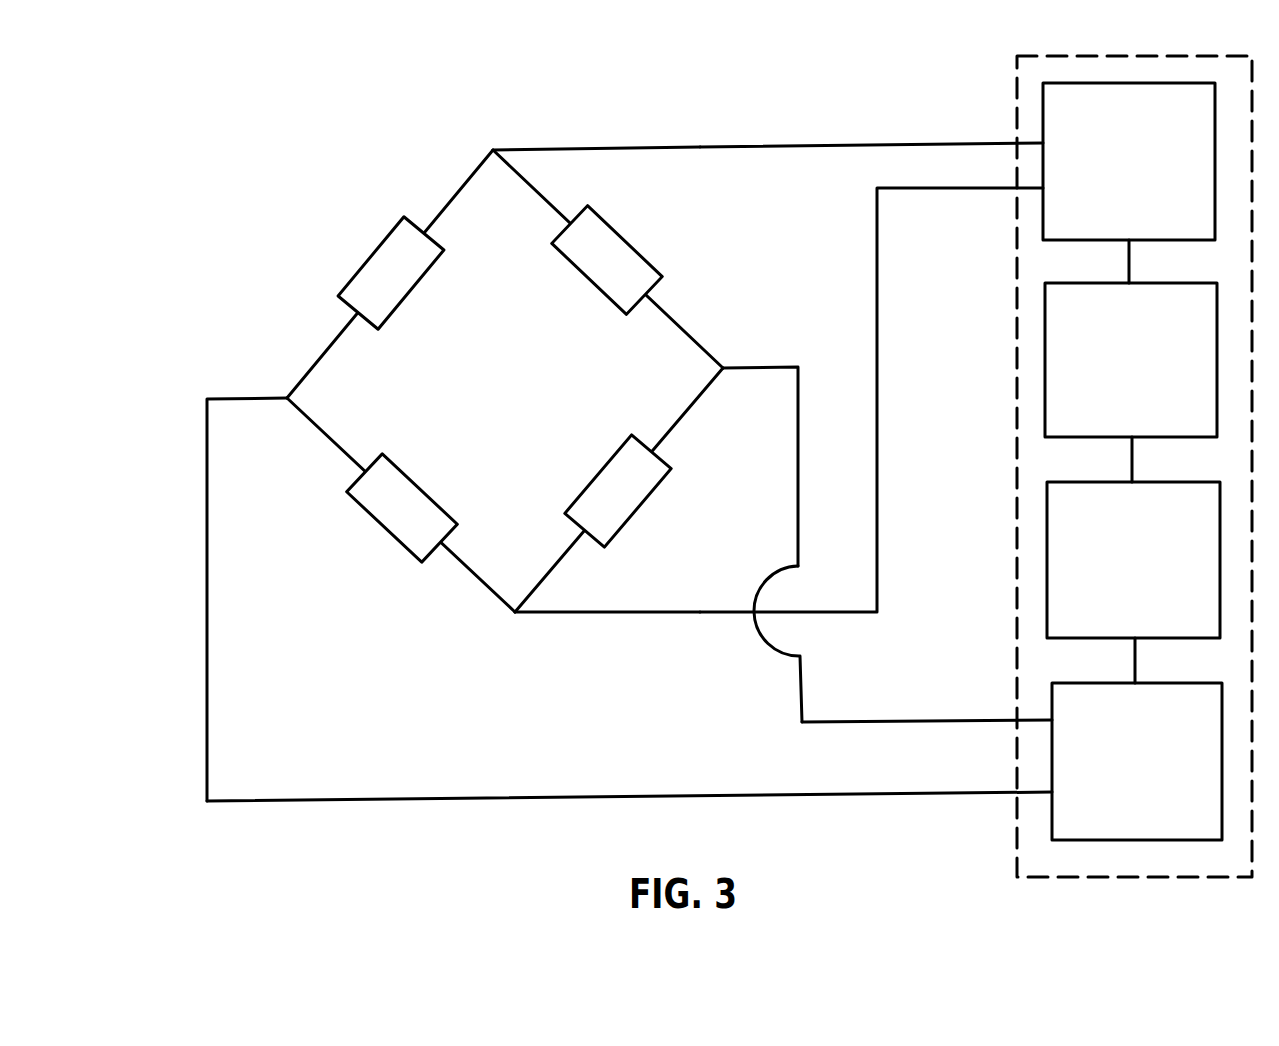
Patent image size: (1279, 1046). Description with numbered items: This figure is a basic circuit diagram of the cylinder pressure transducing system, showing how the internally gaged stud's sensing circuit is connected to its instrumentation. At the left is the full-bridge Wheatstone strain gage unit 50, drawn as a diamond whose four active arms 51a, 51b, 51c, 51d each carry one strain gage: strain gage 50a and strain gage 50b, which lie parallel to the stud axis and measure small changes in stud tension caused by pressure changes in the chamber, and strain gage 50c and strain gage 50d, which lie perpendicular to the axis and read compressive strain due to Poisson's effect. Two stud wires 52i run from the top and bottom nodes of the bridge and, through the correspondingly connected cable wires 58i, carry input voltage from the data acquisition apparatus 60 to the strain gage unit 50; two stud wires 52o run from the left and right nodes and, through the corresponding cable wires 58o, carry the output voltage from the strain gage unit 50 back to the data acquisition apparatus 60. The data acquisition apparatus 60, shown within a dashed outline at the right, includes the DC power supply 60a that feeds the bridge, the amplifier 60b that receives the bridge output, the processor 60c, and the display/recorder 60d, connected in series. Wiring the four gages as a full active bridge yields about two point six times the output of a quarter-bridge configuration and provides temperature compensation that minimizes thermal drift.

The Wheatstone bridge strain gage unit 50 is at (501, 349).
The strain gage 50a is at (364, 260).
The strain gage 50b is at (643, 513).
The strain gage 50c is at (632, 234).
The strain gage 50d is at (395, 543).
The active arm 51a is at (328, 358).
The active arm 51b is at (673, 417).
The active arm 51c is at (527, 192).
The active arm 51d is at (488, 580).
The input stud wires 52i is at (623, 143).
The output stud wires 52o is at (210, 448).
The input cable wires 58i is at (787, 137).
The output cable wires 58o is at (905, 718).
The data acquisition apparatus 60 is at (1008, 93).
The DC power supply 60a is at (1040, 135).
The amplifier 60b is at (1045, 772).
The processor 60c is at (1043, 555).
The display/recorder 60d is at (1040, 358).